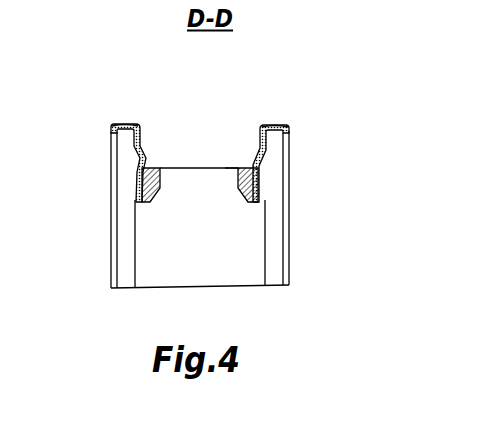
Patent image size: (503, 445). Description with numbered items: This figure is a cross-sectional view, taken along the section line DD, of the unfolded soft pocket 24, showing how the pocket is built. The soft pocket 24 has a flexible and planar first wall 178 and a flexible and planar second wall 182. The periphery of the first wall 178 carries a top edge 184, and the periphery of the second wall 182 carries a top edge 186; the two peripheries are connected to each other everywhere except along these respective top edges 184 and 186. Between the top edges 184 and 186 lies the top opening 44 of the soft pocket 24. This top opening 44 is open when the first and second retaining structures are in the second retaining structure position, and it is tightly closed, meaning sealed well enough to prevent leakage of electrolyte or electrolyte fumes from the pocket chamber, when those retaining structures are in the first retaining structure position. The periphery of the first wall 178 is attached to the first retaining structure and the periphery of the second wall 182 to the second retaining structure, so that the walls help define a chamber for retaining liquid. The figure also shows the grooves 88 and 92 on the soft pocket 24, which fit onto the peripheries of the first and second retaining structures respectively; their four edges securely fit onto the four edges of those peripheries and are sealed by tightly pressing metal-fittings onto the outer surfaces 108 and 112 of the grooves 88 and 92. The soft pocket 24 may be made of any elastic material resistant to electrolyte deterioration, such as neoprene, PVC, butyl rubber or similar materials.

The soft pocket 24 is at (265, 153).
The top opening 44 is at (183, 168).
The groove 88 is at (128, 242).
The groove 92 is at (273, 247).
The outer surface 108 is at (125, 124).
The outer surface 112 is at (272, 125).
The first wall 178 is at (136, 172).
The second wall 182 is at (263, 190).
The top edge 184 is at (158, 168).
The top edge 186 is at (231, 168).